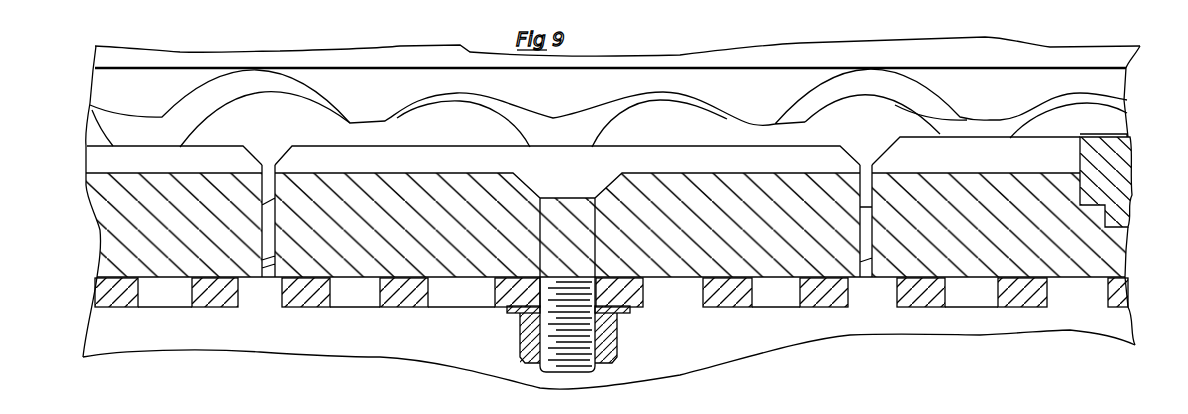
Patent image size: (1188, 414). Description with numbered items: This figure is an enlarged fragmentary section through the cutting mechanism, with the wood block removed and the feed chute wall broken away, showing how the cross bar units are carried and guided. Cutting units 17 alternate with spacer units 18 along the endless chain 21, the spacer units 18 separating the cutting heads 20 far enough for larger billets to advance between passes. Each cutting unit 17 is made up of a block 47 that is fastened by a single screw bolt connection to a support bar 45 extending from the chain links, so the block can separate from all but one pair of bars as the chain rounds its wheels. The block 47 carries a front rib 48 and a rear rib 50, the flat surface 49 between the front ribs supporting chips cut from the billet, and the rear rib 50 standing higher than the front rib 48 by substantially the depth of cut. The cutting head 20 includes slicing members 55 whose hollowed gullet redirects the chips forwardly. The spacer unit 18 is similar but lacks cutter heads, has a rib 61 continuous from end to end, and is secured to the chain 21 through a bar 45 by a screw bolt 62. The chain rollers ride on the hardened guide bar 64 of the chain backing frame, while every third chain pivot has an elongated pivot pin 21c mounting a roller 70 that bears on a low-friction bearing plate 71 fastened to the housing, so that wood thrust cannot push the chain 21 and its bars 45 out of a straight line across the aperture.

The cutting unit 17 is at (103, 248).
The spacer unit 18 is at (473, 274).
The cutting head 20 is at (1088, 134).
The endless chain 21 is at (553, 97).
The elongated pivot pin 21c is at (271, 162).
The support bar 45 is at (282, 308).
The block 47 is at (975, 273).
The front rib 48 is at (226, 170).
The flat surface 49 is at (160, 171).
The rear rib 50 is at (1014, 169).
The slicing member 55 is at (1117, 184).
The continuous rib 61 is at (437, 145).
The screw bolt 62 is at (578, 240).
The guide bar 64 is at (714, 353).
The roller 70 is at (940, 106).
The bearing plate 71 is at (617, 52).